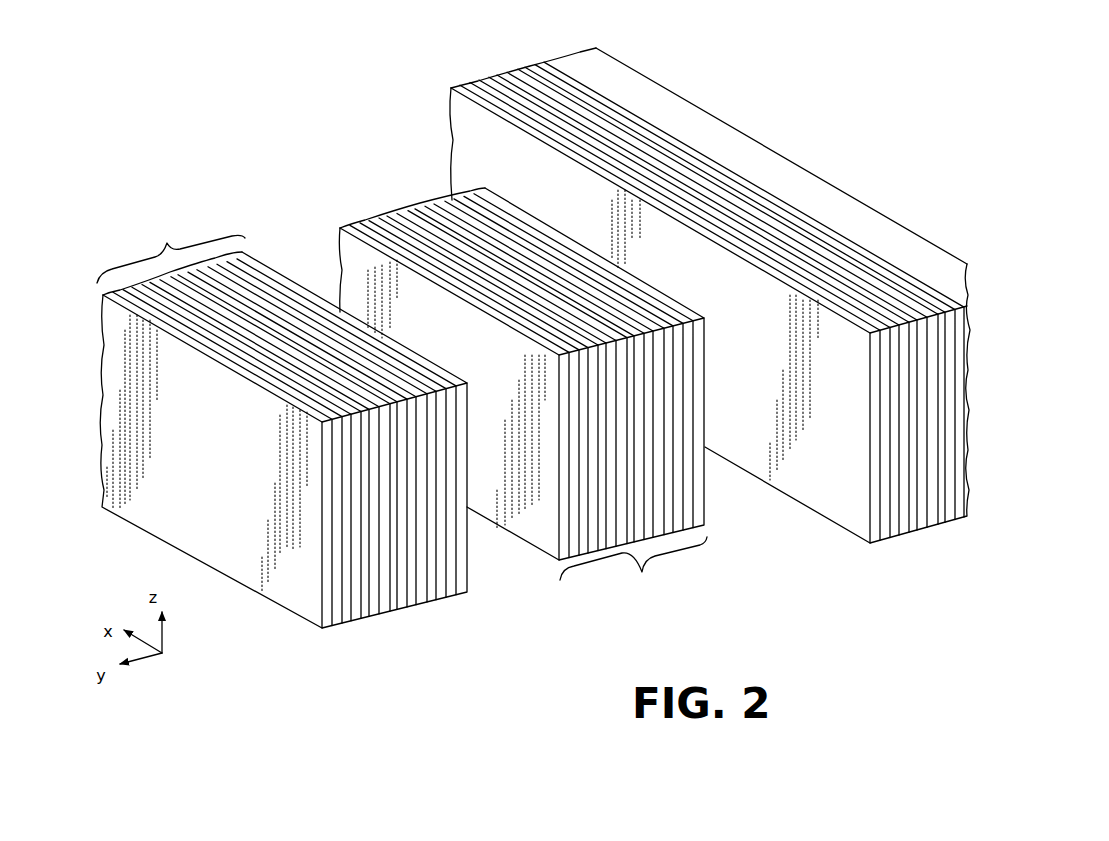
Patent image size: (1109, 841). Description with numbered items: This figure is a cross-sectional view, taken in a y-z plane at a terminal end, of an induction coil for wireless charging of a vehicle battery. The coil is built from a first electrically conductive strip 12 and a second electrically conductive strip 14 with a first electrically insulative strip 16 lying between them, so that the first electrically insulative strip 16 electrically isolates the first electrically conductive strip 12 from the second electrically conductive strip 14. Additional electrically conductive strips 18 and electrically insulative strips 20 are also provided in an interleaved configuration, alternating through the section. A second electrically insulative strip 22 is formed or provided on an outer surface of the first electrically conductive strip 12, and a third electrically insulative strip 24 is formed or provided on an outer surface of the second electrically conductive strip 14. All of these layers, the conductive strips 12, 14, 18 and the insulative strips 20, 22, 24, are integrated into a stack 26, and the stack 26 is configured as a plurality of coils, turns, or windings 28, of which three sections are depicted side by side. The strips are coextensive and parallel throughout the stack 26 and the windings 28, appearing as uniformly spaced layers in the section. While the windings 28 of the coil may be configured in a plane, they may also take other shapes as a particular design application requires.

The first electrically conductive strip 12 is at (333, 627).
The second electrically conductive strip 14 is at (353, 623).
The first electrically insulative strip 16 is at (343, 625).
The additional electrically conductive strips 18 is at (412, 610).
The electrically insulative strips 20 is at (460, 600).
The second electrically insulative strip 22 is at (325, 628).
The third electrically insulative strip 24 is at (367, 622).
The stack 26 is at (167, 243).
The windings 28 is at (158, 190).